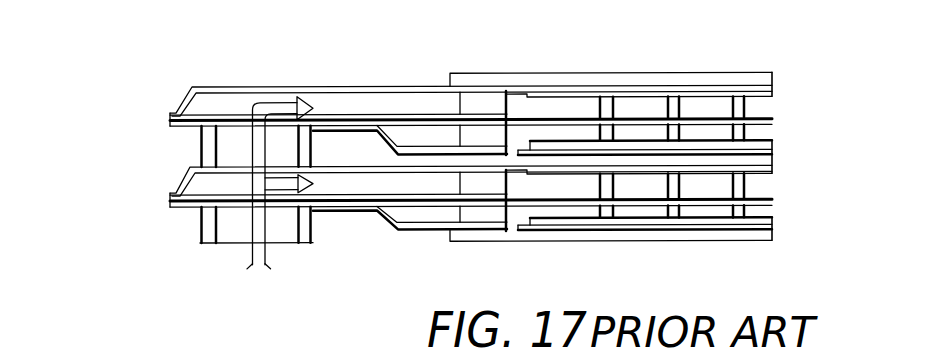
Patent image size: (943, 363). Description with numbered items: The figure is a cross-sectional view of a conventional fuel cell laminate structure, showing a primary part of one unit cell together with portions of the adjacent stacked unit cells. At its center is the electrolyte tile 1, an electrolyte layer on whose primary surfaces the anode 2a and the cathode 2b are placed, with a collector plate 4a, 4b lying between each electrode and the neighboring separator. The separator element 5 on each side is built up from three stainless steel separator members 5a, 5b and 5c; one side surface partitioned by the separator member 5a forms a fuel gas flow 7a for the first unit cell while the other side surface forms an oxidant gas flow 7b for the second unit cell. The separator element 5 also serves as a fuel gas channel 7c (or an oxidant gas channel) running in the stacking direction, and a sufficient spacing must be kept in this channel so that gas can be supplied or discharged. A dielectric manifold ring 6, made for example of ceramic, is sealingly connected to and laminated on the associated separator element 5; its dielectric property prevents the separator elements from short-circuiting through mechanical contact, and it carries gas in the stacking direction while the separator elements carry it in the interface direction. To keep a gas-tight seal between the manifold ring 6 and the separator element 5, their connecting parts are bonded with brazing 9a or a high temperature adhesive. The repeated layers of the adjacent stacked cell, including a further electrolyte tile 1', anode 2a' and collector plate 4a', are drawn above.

The electrolyte tile 1 is at (645, 147).
The electrolyte layer 1' is at (645, 223).
The anode 2a is at (639, 171).
The electrode 2a' is at (639, 95).
The cathode 2b is at (651, 140).
The collector plate 4a is at (672, 195).
The spacer 4a' is at (672, 106).
The collector plate 4b is at (672, 132).
The separator element 5 is at (471, 105).
The separator member 5a is at (338, 114).
The separator member 5b is at (471, 118).
The separator member 5c is at (471, 100).
The dielectric manifold ring 6 is at (256, 184).
The fuel gas flow 7a is at (280, 183).
The oxidant gas flow 7b is at (280, 183).
The fuel gas channel 7c is at (410, 177).
The brazing 9a is at (471, 199).